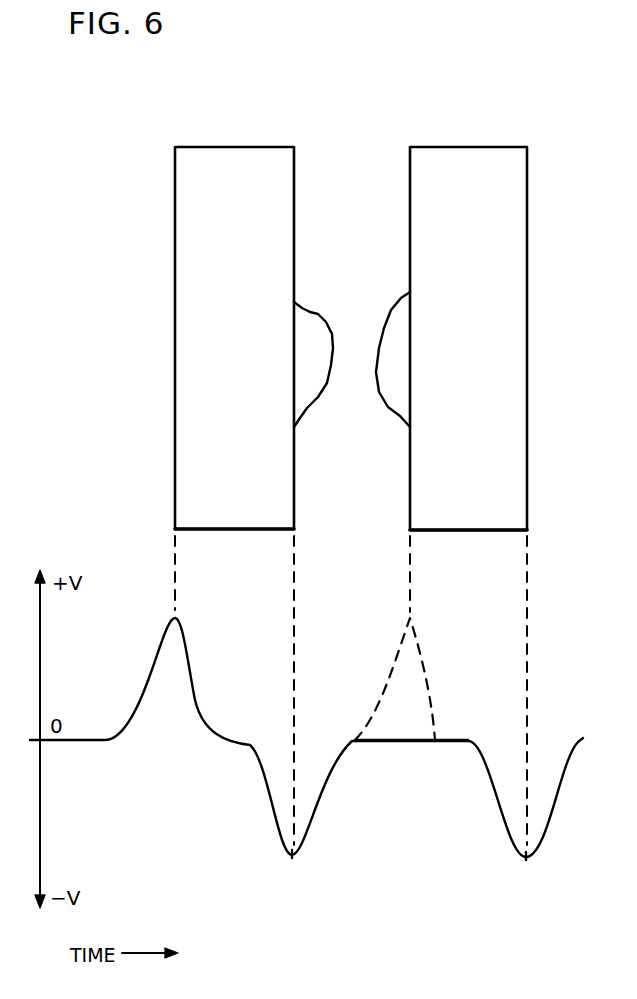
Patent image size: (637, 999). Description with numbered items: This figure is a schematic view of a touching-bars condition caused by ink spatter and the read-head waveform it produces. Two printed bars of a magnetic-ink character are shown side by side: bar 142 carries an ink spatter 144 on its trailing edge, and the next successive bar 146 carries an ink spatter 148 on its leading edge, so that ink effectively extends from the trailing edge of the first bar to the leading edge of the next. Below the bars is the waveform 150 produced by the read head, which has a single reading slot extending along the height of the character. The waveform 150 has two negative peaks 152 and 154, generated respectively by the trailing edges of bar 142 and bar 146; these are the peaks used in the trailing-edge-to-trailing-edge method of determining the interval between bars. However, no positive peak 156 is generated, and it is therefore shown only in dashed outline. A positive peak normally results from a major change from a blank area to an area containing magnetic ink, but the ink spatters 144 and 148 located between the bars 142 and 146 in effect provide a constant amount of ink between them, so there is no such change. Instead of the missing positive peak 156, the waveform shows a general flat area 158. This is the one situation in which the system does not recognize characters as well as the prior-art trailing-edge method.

The bar 142 is at (237, 158).
The ink spatter 144 is at (313, 330).
The bar 146 is at (492, 160).
The ink spatter 148 is at (397, 410).
The waveform 150 is at (118, 720).
The negative peak 152 is at (292, 858).
The negative peak 154 is at (526, 860).
The positive peak 156 is at (413, 624).
The flat area 158 is at (384, 742).